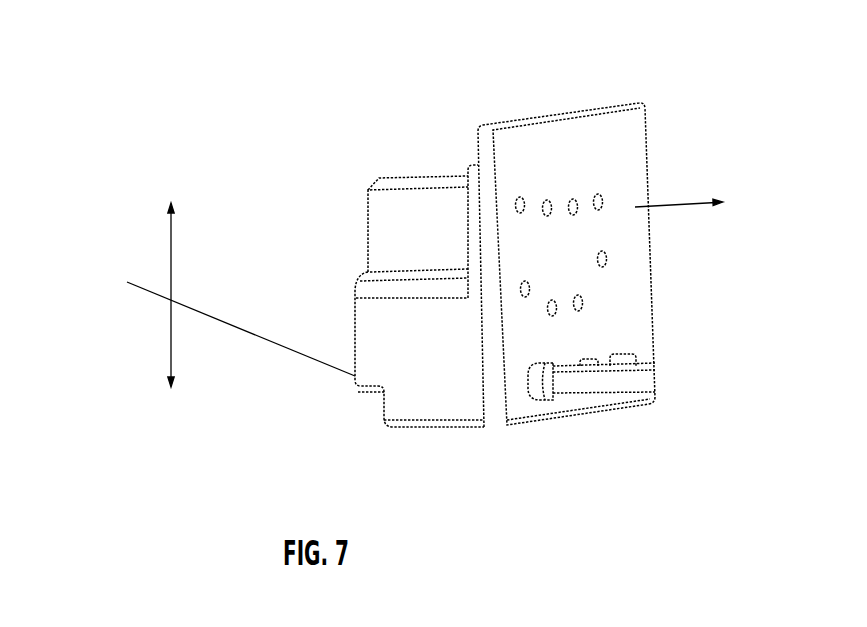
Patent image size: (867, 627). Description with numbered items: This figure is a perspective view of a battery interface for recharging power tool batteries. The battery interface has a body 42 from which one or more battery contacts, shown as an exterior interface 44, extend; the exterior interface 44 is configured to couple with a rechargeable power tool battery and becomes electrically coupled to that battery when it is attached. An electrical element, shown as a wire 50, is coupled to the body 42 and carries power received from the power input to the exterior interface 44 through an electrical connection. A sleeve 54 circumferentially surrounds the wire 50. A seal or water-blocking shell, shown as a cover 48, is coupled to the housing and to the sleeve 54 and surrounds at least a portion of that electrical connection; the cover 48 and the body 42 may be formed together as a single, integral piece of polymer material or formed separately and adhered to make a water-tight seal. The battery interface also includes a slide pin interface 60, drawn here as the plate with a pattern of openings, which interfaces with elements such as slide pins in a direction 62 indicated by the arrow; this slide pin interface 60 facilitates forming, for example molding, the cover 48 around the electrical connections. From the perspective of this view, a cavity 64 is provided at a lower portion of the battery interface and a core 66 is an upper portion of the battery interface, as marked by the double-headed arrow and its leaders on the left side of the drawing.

The body 42 is at (476, 368).
The exterior interface 44 is at (368, 218).
The cover 48 is at (562, 356).
The wire 50 is at (647, 372).
The sleeve 54 is at (580, 382).
The slide pin interface 60 is at (597, 167).
The direction 62 is at (697, 186).
The cavity 64 is at (145, 359).
The core 66 is at (147, 239).